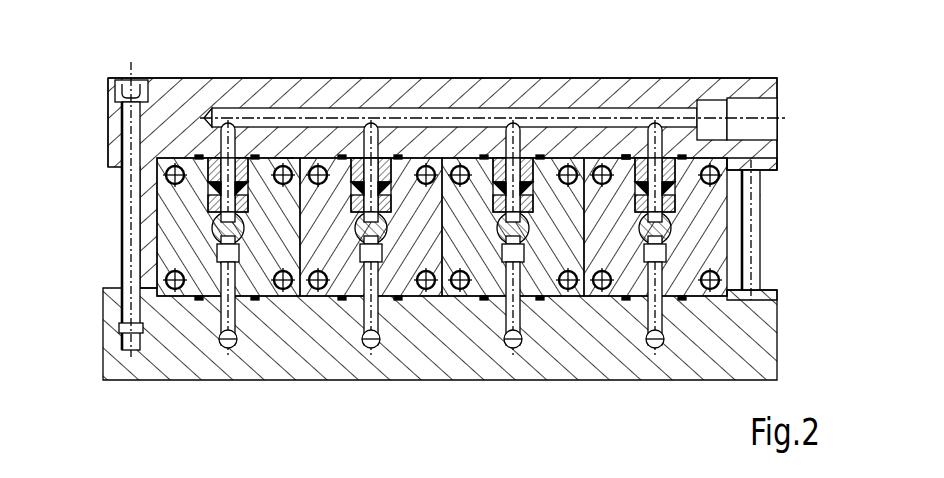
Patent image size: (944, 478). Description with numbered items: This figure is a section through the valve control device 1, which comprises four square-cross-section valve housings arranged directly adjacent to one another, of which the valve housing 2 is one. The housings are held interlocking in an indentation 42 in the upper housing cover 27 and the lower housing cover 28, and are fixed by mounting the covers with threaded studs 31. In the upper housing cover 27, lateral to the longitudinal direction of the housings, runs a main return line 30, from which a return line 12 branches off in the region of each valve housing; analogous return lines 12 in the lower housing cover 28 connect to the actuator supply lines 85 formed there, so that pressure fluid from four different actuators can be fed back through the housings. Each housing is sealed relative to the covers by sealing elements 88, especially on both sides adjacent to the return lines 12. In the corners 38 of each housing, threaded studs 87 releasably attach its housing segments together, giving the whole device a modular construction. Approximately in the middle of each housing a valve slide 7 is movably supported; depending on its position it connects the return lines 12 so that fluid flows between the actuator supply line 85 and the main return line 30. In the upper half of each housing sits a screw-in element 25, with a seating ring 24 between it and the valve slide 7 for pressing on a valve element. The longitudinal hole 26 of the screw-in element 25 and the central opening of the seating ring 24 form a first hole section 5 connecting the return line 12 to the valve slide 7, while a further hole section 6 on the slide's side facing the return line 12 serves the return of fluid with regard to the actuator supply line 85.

The valve control device 1 is at (78, 45).
The valve housing 2 is at (692, 71).
The first hole section 5 is at (212, 191).
The hole section 6 is at (219, 250).
The valve slide 7 is at (214, 226).
The return line 12 is at (222, 137).
The seating ring 24 is at (626, 155).
The screw-in element 25 is at (668, 162).
The longitudinal hole 26 is at (380, 157).
The upper housing cover 27 is at (226, 127).
The lower housing cover 28 is at (208, 368).
The main return line 30 is at (420, 114).
The threaded stud 31 is at (134, 78).
The corner 38 is at (731, 160).
The indentation 42 is at (287, 150).
The actuator supply line 85 is at (236, 346).
The threaded stud 87 is at (760, 217).
The sealing element 88 is at (482, 155).